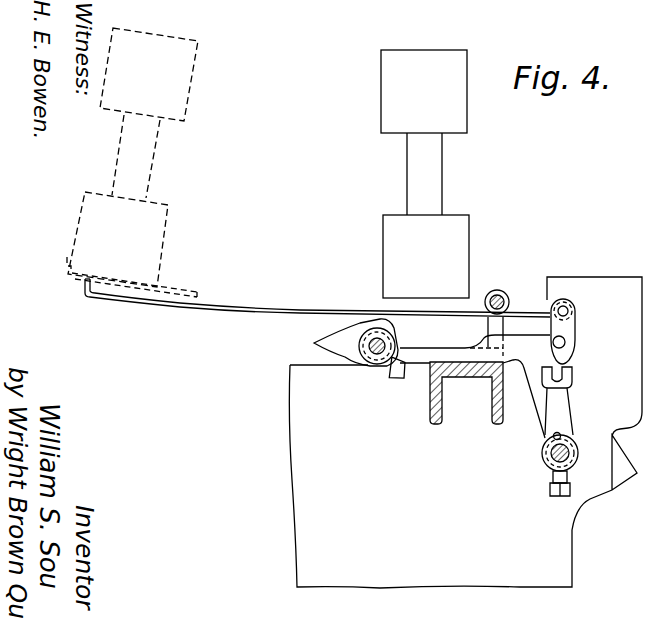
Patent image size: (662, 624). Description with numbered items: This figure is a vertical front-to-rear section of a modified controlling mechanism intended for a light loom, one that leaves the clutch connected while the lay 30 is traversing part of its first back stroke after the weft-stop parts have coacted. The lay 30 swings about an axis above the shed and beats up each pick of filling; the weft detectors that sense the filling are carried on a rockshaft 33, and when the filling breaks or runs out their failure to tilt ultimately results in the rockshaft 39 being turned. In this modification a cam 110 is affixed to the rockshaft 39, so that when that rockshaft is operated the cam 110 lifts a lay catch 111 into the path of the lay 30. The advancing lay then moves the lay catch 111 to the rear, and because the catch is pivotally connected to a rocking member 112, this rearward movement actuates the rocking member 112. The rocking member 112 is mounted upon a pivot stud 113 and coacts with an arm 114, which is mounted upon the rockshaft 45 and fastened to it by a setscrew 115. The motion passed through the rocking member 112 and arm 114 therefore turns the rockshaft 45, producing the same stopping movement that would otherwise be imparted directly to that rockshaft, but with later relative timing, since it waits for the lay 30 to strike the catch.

The lay 30 is at (268, 163).
The rockshaft 33 is at (505, 296).
The rockshaft 39 is at (372, 354).
The rockshaft 45 is at (549, 453).
The cam 110 is at (321, 336).
The lay catch 111 is at (65, 268).
The rocking member 112 is at (572, 325).
The pivot stud 113 is at (565, 342).
The arm 114 is at (562, 400).
The setscrew 115 is at (546, 492).